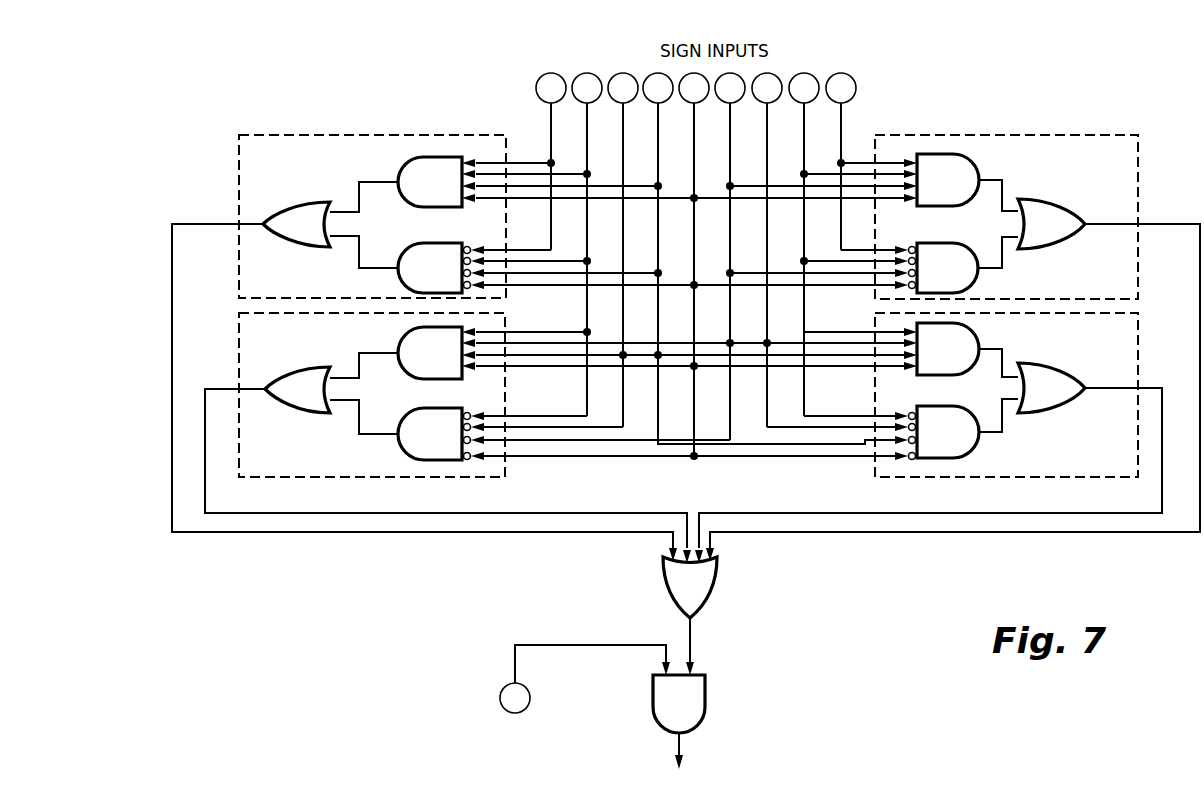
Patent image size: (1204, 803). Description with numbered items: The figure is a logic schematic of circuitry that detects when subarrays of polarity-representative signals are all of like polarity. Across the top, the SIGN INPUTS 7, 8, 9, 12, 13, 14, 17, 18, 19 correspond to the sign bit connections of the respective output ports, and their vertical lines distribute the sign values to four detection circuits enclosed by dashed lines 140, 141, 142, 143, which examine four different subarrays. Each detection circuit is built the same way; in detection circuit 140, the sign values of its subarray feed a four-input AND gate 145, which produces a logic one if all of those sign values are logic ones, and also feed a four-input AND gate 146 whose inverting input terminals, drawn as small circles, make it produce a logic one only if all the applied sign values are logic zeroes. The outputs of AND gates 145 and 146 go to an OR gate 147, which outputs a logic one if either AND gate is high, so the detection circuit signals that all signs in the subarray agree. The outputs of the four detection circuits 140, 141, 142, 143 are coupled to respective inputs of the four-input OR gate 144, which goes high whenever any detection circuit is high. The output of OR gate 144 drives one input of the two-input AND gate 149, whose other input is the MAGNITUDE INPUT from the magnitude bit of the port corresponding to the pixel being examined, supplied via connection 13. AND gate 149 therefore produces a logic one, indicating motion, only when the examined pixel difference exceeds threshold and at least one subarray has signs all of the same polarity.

The sign input 7 is at (551, 161).
The sign input 8 is at (587, 244).
The sign input 9 is at (623, 250).
The sign input 12 is at (769, 258).
The sign input / magnitude input 13 is at (478, 713).
The sign input 14 is at (730, 256).
The sign input 17 is at (767, 250).
The sign input 18 is at (804, 244).
The sign input 19 is at (841, 161).
The detection circuit 140 is at (1006, 199).
The detection circuit 141 is at (1138, 345).
The detection circuit 142 is at (440, 480).
The detection circuit 143 is at (413, 134).
The four-input OR gate 144 is at (716, 581).
The four-input AND gate 145 is at (970, 170).
The four-input AND gate with inverting inputs 146 is at (950, 245).
The OR gate 147 is at (1062, 210).
The two-input AND gate 149 is at (703, 697).